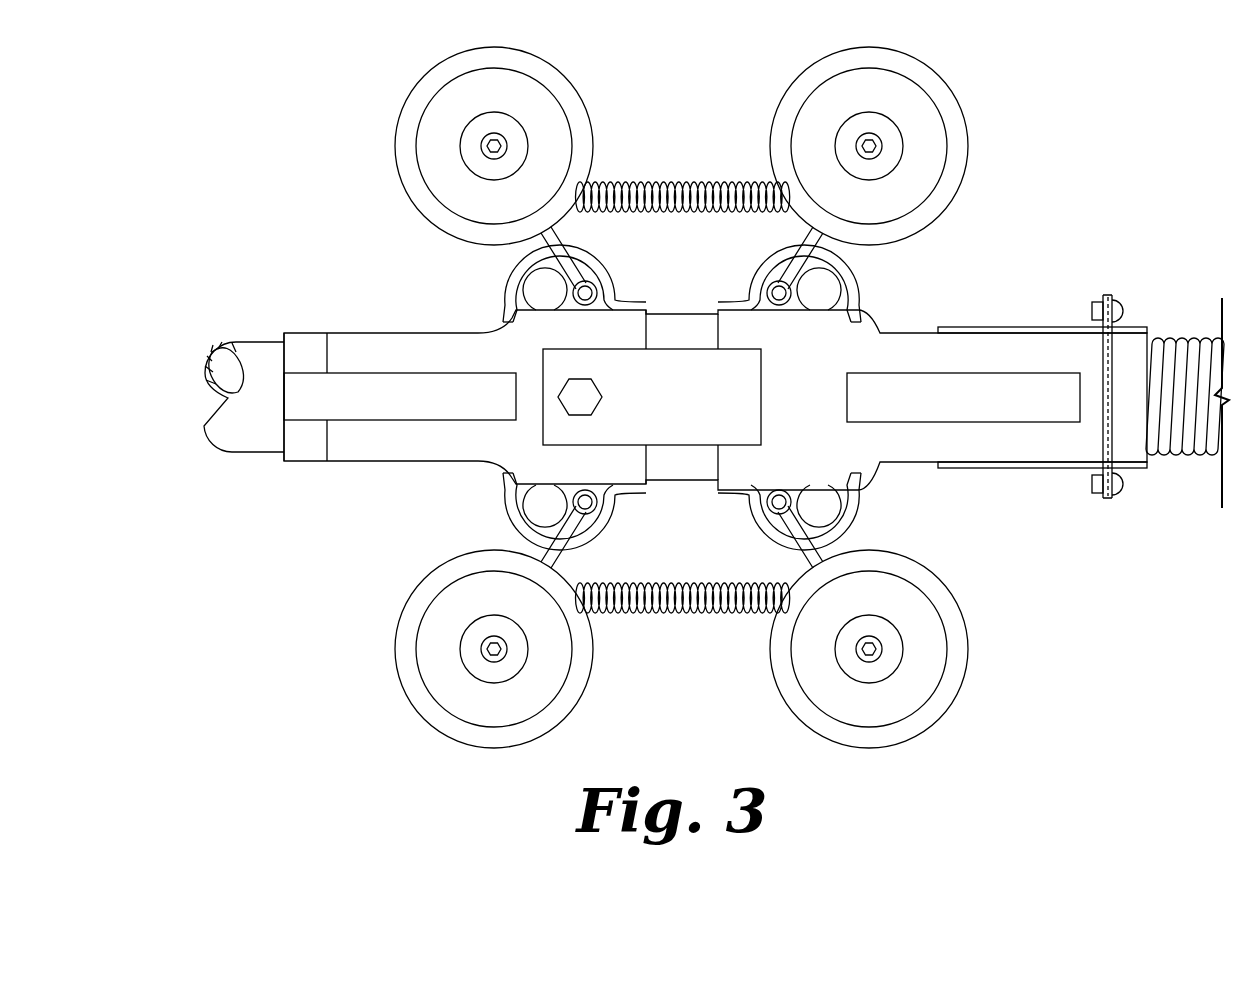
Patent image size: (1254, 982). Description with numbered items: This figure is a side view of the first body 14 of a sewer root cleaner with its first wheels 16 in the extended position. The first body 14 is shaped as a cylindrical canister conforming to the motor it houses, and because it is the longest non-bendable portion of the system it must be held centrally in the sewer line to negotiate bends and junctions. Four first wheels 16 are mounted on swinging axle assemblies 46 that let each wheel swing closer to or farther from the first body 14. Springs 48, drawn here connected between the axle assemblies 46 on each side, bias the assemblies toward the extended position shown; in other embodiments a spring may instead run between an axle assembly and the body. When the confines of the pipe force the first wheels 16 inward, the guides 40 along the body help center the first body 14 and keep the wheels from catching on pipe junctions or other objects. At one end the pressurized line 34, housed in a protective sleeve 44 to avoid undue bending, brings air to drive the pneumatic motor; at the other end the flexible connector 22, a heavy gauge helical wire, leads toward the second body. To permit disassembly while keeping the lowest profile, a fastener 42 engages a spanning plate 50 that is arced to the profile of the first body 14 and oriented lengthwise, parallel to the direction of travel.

The first body 14 is at (286, 88).
The first wheel 16 is at (949, 84).
The flexible connector 22 is at (1178, 338).
The pressurized line 34 is at (196, 397).
The guide 40 is at (1006, 403).
The fastener 42 is at (578, 398).
The sleeve 44 is at (258, 340).
The swinging axle assembly 46 is at (810, 285).
The spring 48 is at (671, 182).
The spanning plate 50 is at (668, 409).